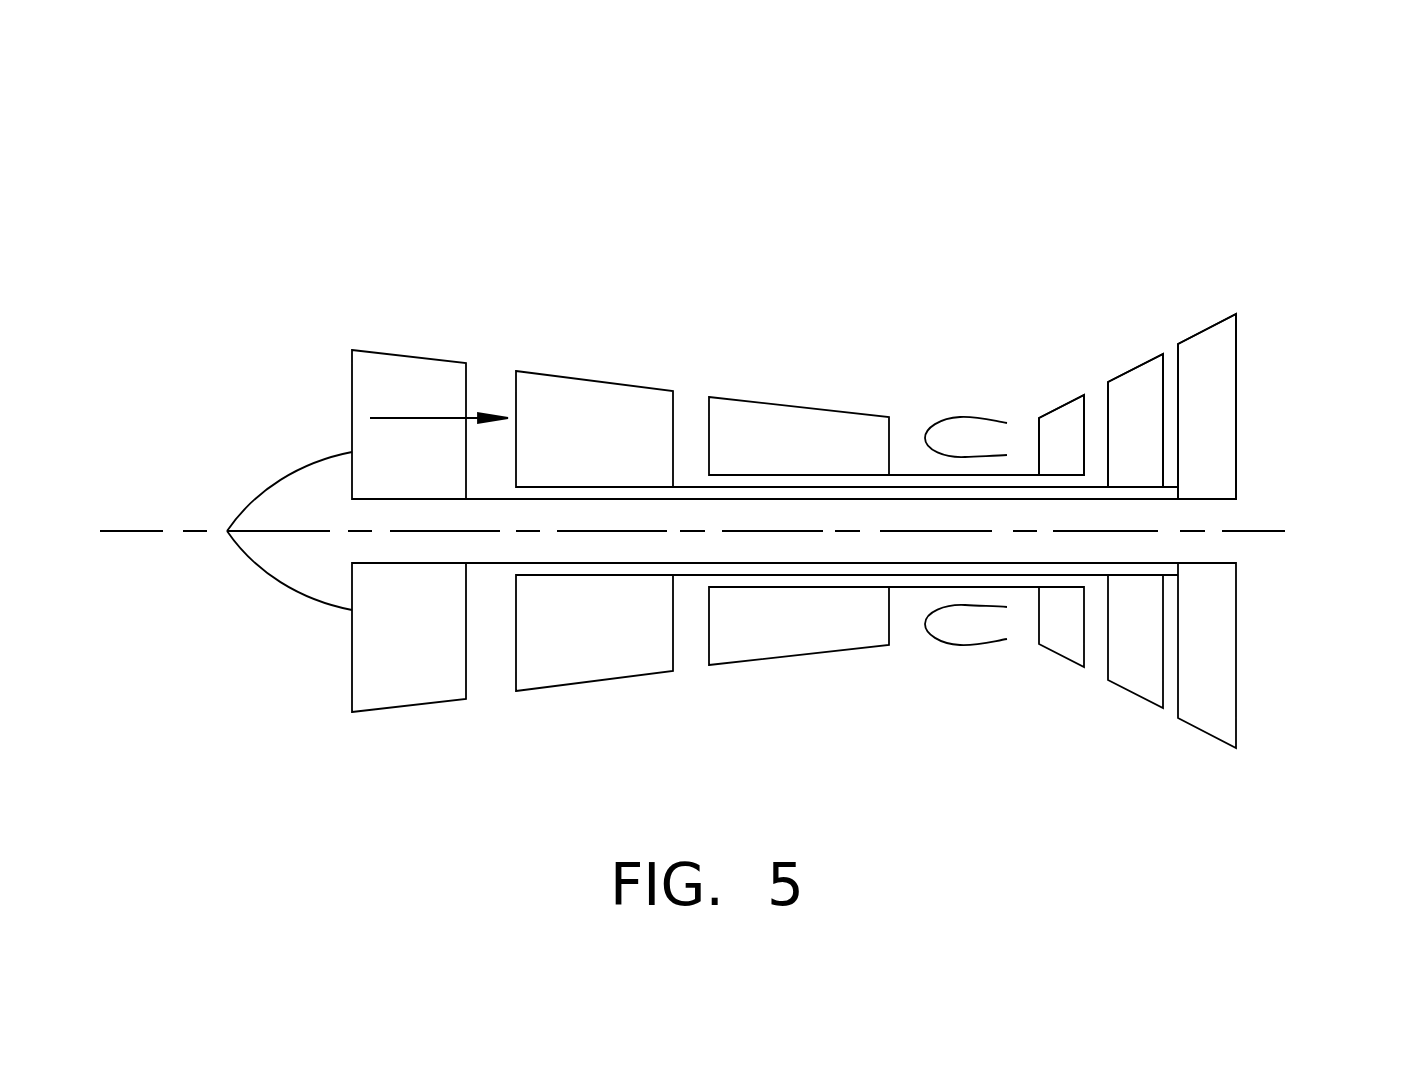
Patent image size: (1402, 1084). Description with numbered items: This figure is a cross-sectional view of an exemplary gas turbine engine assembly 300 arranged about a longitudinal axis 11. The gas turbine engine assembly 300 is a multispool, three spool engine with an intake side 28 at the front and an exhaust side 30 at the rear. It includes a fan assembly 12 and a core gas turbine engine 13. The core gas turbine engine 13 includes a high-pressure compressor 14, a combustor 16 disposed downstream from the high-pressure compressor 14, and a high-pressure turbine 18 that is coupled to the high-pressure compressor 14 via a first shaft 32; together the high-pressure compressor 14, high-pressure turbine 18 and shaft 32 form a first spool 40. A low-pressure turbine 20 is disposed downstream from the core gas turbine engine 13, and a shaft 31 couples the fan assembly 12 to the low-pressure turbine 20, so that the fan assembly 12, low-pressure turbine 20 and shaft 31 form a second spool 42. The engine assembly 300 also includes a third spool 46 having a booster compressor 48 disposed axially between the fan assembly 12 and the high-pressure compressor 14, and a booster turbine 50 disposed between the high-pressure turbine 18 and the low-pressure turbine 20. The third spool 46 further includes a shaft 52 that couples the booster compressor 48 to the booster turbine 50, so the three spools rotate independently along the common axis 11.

The gas turbine engine assembly 300 is at (1060, 168).
The longitudinal axis 11 is at (131, 531).
The fan assembly 12 is at (305, 363).
The core gas turbine engine 13 is at (902, 335).
The high-pressure compressor 14 is at (757, 400).
The combustor 16 is at (963, 423).
The high-pressure turbine 18 is at (1063, 405).
The low-pressure turbine 20 is at (1208, 327).
The intake side 28 is at (443, 420).
The exhaust side 30 is at (1258, 397).
The shaft 31 is at (1081, 502).
The first shaft 32 is at (910, 477).
The first spool 40 is at (897, 477).
The second spool 42 is at (1167, 502).
The third spool 46 is at (727, 488).
The booster compressor 48 is at (558, 372).
The booster turbine 50 is at (1145, 360).
The shaft 52 is at (798, 489).